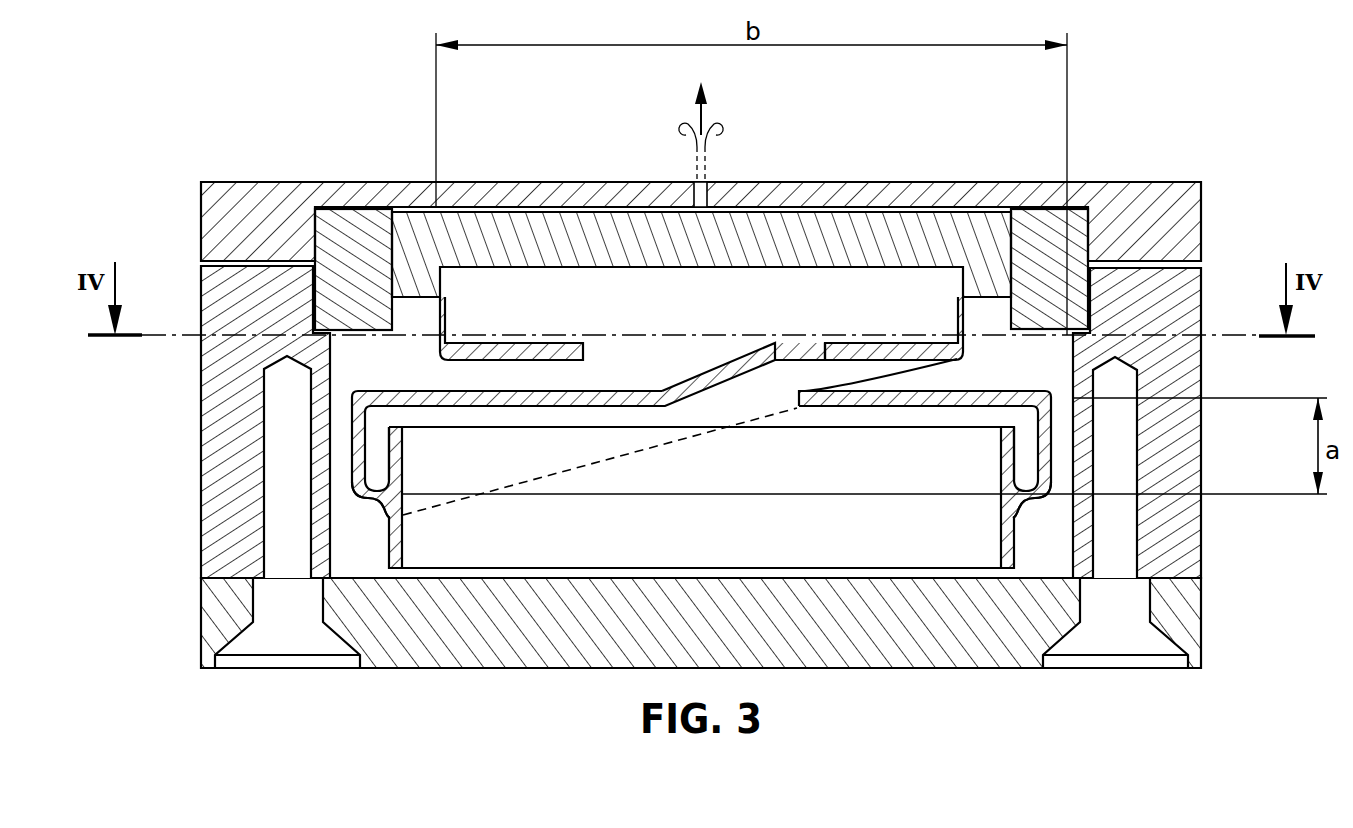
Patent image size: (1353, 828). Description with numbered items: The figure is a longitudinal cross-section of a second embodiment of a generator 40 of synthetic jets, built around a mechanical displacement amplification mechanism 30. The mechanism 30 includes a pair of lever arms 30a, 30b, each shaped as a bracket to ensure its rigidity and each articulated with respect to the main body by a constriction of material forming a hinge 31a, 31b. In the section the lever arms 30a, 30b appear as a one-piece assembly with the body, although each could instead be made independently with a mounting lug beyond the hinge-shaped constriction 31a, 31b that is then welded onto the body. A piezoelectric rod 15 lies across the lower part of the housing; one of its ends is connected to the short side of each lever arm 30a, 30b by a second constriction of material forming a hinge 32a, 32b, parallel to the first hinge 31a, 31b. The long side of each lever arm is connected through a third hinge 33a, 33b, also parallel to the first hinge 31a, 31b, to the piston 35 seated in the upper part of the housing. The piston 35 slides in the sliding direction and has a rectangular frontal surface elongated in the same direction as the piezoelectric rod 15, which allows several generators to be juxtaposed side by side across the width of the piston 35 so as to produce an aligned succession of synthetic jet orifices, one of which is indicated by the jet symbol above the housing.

The generator 40 is at (258, 146).
The piston 35 is at (551, 240).
The third hinge 33a is at (957, 320).
The third hinge 33b is at (445, 320).
The mechanical displacement amplification mechanism 30 is at (618, 511).
The lever arm 30a is at (603, 400).
The lever arm 30b is at (847, 396).
The hinge 31a is at (337, 395).
The hinge 31b is at (1090, 402).
The second hinge 32a is at (375, 498).
The second hinge 32b is at (1027, 500).
The piezoelectric rod 15 is at (717, 548).